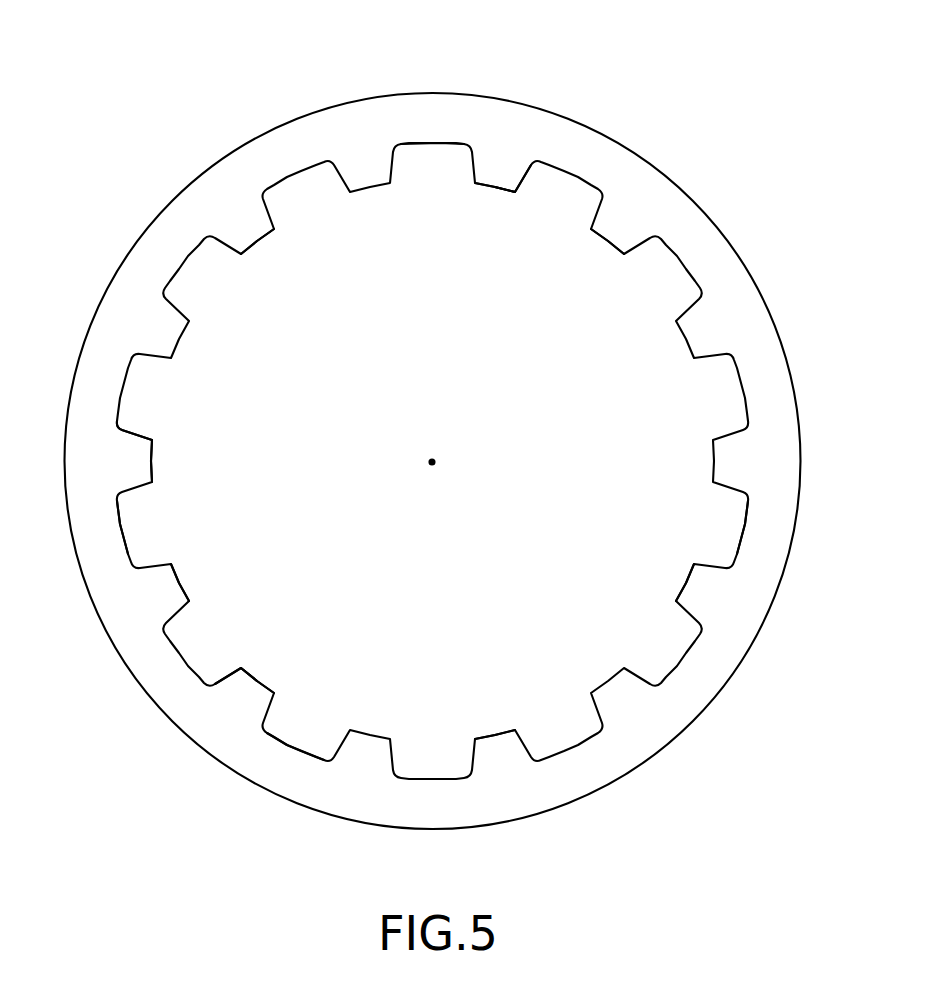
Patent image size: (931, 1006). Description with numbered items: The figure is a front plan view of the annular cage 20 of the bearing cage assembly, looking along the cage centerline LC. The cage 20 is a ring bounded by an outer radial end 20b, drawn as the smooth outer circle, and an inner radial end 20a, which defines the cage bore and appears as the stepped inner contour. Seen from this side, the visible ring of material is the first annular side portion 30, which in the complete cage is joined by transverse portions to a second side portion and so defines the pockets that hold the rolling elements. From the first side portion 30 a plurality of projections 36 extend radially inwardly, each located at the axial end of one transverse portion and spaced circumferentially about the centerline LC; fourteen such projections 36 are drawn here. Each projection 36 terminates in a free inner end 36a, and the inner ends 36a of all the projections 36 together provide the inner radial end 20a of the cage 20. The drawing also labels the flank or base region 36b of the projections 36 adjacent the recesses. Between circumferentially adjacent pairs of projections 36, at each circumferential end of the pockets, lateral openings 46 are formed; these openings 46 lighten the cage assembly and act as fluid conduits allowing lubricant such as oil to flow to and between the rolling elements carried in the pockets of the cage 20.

The annular cage 20 is at (118, 175).
The inner radial end 20a is at (183, 340).
The outer radial end 20b is at (674, 178).
The first annular side portion 30 is at (748, 300).
The projection 36 is at (261, 240).
The free inner end 36a is at (493, 195).
The tooth root 36b is at (507, 148).
The lateral opening 46 is at (432, 170).
The centerline LC is at (432, 460).